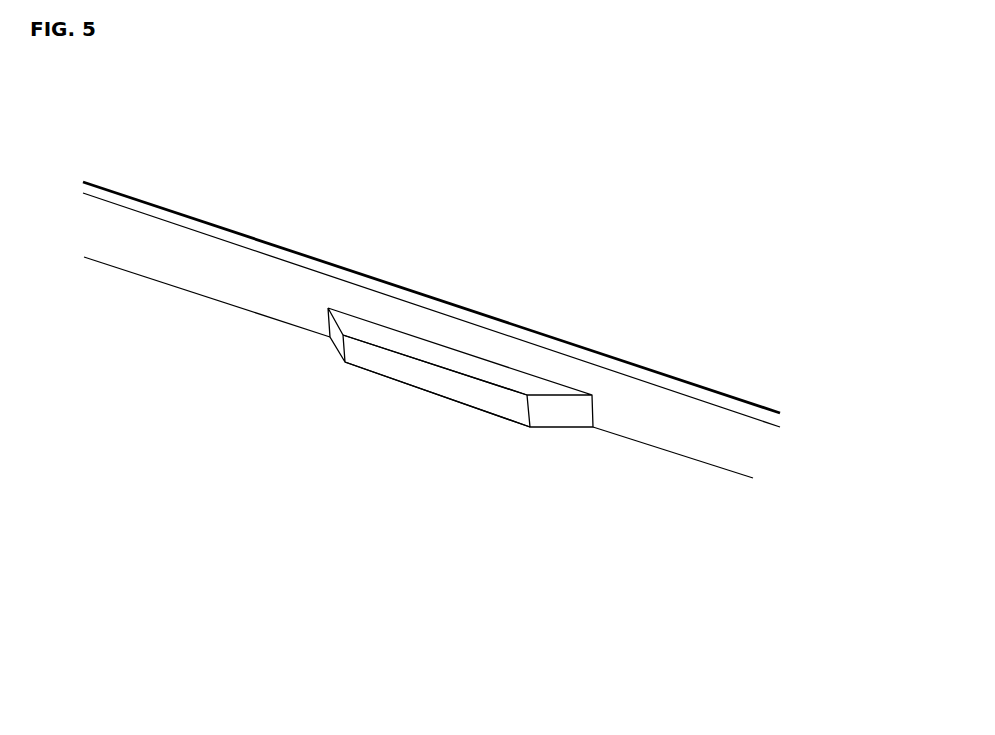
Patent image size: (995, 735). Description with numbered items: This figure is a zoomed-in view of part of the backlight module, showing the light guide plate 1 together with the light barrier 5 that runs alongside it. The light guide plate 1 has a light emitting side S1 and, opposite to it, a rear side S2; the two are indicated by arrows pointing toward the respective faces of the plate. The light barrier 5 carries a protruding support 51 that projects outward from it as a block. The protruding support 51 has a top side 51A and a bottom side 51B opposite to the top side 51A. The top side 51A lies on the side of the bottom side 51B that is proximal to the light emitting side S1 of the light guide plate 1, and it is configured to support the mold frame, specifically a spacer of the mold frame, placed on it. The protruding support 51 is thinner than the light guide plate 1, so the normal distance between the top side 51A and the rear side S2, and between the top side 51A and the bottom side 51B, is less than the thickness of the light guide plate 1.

The light guide plate 1 is at (227, 190).
The light barrier 5 is at (257, 297).
The protruding support 51 is at (403, 373).
The top side 51A is at (453, 360).
The bottom side 51B is at (455, 390).
The light emitting side S1 is at (538, 228).
The rear side S2 is at (638, 395).